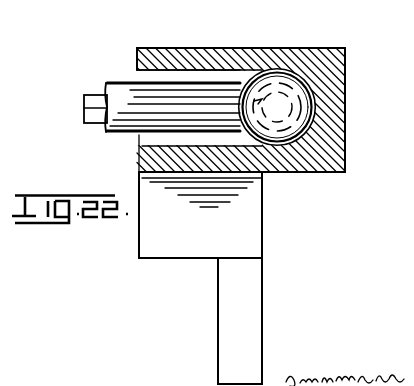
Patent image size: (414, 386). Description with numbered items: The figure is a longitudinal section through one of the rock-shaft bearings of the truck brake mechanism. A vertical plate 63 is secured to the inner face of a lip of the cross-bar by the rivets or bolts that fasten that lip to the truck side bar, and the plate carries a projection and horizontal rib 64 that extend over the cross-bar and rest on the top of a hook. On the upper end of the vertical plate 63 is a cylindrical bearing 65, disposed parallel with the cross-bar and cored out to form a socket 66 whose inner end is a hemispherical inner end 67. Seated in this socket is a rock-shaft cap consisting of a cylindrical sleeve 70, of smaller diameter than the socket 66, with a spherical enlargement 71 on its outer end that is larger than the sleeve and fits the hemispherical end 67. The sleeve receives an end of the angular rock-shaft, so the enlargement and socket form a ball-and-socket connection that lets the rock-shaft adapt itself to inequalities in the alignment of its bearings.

The vertical plate 63 is at (232, 312).
The projection and rib 64 is at (187, 255).
The cylindrical bearing 65 is at (222, 63).
The socket 66 is at (177, 70).
The hemispherical inner end 67 is at (323, 108).
The cylindrical sleeve 70 is at (122, 107).
The spherical enlargement 71 is at (270, 88).